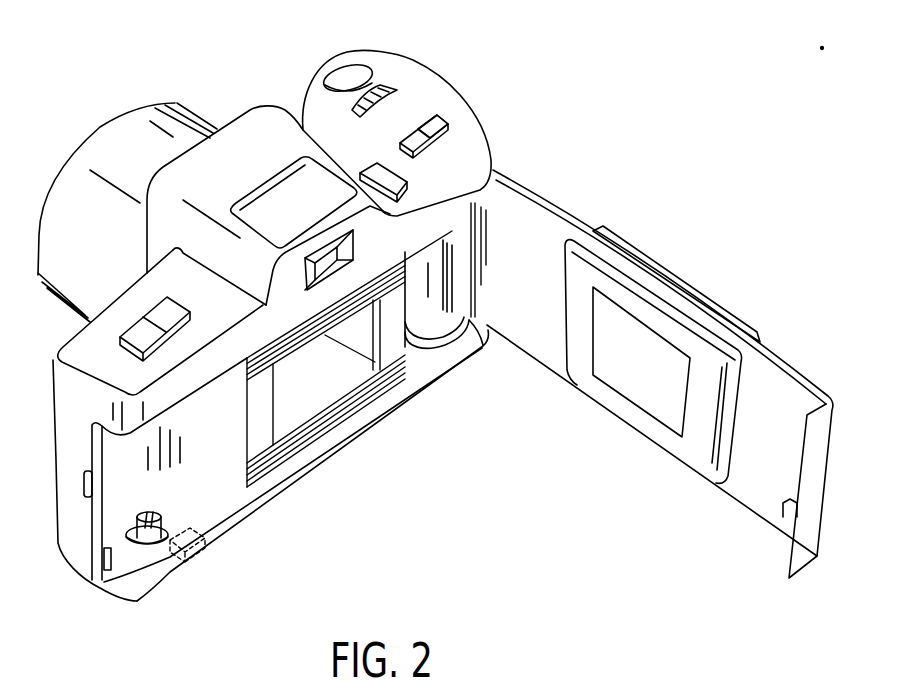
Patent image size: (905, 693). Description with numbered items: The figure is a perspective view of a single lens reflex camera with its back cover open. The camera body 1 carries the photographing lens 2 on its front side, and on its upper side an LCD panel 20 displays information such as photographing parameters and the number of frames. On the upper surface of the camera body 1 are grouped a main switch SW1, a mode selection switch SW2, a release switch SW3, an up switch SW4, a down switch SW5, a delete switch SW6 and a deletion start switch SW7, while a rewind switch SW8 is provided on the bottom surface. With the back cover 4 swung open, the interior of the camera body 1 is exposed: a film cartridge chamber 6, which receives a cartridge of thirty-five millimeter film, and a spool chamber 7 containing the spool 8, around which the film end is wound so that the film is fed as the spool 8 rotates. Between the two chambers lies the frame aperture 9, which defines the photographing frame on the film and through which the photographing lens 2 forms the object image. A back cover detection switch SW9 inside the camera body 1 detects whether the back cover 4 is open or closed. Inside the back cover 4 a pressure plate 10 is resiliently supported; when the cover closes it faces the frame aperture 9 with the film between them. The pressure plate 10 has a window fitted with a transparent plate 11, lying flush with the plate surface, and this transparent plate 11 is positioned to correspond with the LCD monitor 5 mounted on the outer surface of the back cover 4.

The camera body 1 is at (450, 200).
The photographing lens 2 is at (73, 182).
The back cover 4 is at (780, 380).
The LCD monitor 5 is at (697, 288).
The film cartridge chamber 6 is at (230, 525).
The spool chamber 7 is at (413, 360).
The spool 8 is at (447, 250).
The frame aperture 9 is at (330, 392).
The pressure plate 10 is at (703, 452).
The transparent plate 11 is at (625, 372).
The LCD panel 20 is at (277, 205).
The main switch SW1 is at (410, 181).
The mode selection switch SW2 is at (380, 83).
The release switch SW3 is at (343, 77).
The up switch SW4 is at (407, 133).
The down switch SW5 is at (433, 115).
The delete switch SW6 is at (163, 305).
The deletion start switch SW7 is at (133, 335).
The rewind switch SW8 is at (197, 563).
The back cover detection switch SW9 is at (127, 565).